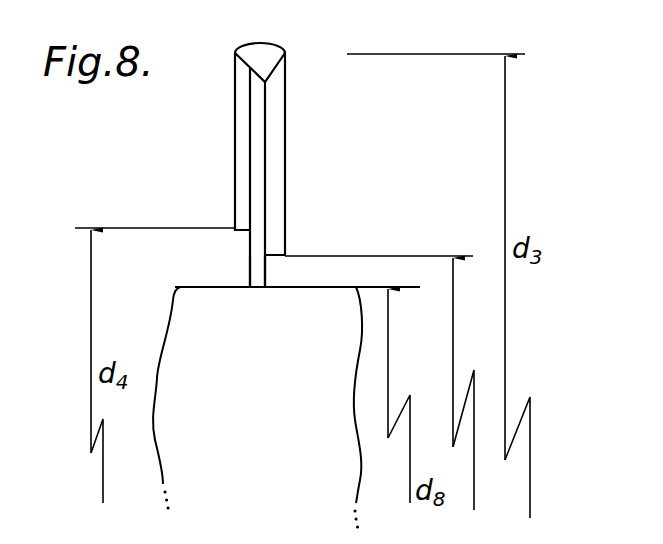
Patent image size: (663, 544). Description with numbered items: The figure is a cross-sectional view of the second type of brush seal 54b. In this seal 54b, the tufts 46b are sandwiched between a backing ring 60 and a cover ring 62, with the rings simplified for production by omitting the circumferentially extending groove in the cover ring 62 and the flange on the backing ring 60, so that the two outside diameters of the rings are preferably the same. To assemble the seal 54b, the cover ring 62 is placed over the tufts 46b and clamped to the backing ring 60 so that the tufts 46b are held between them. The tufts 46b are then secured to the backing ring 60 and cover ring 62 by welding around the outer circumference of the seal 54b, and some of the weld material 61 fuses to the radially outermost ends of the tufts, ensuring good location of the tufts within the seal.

The weld material 61 is at (285, 53).
The cover ring 62 is at (235, 141).
The brush seal 54b is at (293, 154).
The backing ring 60 is at (283, 218).
The tufts 46b is at (250, 265).